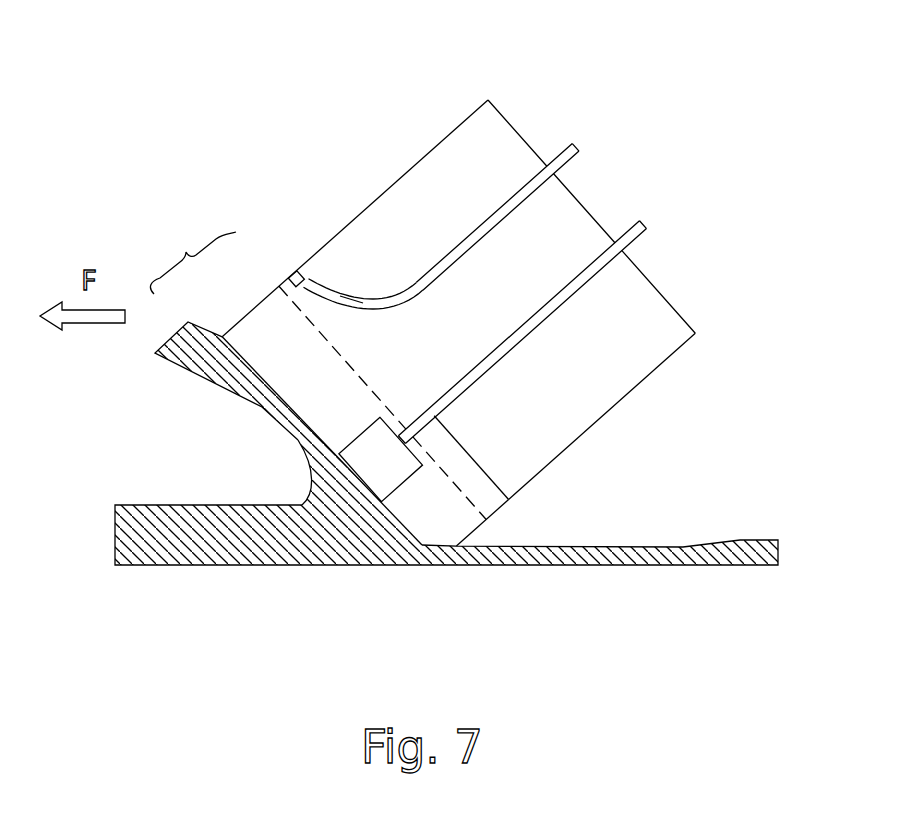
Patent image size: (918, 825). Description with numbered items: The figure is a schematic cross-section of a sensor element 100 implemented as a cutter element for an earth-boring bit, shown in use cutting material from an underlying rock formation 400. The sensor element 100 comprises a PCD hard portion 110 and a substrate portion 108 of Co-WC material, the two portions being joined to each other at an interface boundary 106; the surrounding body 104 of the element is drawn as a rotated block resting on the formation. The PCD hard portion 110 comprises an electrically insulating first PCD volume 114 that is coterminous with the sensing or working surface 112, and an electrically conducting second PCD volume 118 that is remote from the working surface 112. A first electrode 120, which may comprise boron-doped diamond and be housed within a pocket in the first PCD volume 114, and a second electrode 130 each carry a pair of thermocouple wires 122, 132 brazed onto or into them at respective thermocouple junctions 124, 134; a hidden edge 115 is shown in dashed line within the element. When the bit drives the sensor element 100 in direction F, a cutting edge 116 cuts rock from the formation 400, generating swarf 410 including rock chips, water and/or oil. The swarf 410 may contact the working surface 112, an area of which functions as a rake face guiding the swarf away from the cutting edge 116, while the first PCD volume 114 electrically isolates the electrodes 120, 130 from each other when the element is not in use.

The sensor element 100 is at (469, 84).
The housing side wall 104 is at (667, 288).
The interface boundary 106 is at (498, 480).
The substrate portion 108 is at (636, 358).
The PCD hard portion 110 is at (189, 256).
The sensing or working surface 112 is at (317, 437).
The first PCD volume 114 is at (260, 347).
The hidden channel edge 115 is at (483, 522).
The cutting edge 116 is at (456, 546).
The second PCD volume 118 is at (288, 281).
The first electrode 120 is at (399, 468).
The thermocouple wires 122 is at (647, 232).
The thermocouple junction 124 is at (418, 432).
The second electrode 130 is at (294, 274).
The thermocouple wires 132 is at (563, 148).
The thermocouple junction 134 is at (345, 305).
The rock formation 400 is at (228, 540).
The swarf 410 is at (190, 348).